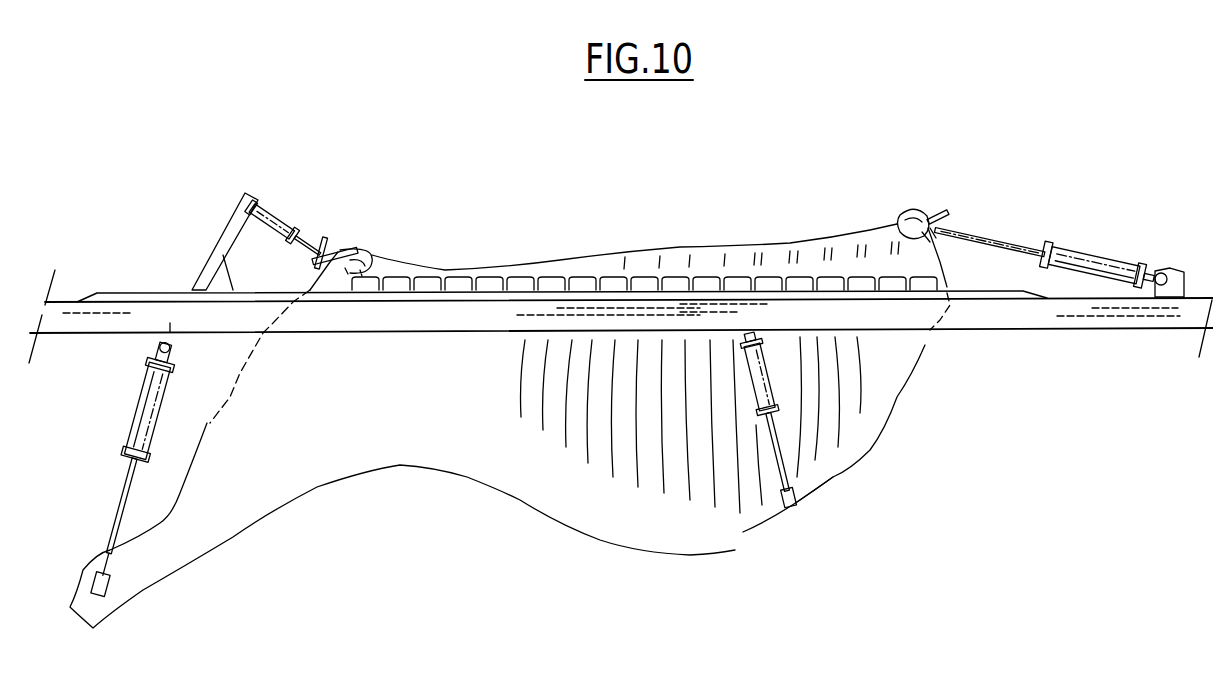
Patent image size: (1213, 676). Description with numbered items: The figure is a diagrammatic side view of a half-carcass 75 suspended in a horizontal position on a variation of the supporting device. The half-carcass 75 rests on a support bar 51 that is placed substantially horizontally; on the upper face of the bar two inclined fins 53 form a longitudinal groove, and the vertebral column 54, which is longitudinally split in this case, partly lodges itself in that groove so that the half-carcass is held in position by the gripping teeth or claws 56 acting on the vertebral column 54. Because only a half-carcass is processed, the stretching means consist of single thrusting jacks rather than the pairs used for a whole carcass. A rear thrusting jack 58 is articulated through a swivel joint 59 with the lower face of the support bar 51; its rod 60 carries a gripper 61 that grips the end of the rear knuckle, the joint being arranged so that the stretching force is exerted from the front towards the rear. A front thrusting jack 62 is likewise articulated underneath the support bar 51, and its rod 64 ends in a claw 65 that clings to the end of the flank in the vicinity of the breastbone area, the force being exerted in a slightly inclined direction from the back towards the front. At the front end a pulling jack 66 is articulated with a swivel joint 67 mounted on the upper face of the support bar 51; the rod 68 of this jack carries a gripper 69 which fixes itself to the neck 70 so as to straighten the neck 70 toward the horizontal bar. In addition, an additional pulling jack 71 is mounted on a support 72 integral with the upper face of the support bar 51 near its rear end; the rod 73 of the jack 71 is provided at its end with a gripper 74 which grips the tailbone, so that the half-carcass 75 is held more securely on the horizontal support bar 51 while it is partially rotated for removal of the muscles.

The support bar 51 is at (1027, 313).
The inclined fins 53 is at (970, 296).
The vertebral column 54 is at (644, 242).
The gripping teeth 56 is at (732, 284).
The rear thrusting jack 58 is at (140, 405).
The swivel joint 59 is at (162, 341).
The rod 60 is at (123, 498).
The gripper 61 is at (107, 587).
The front thrusting jack 62 is at (750, 383).
The rod 64 is at (777, 463).
The claw 65 is at (797, 502).
The pulling jack 66 is at (1098, 258).
The swivel joint 67 is at (1160, 272).
The rod 68 is at (1000, 240).
The gripper 69 is at (927, 222).
The neck 70 is at (890, 250).
The additional pulling jack 71 is at (275, 222).
The support 72 is at (227, 243).
The rod 73 is at (307, 247).
The gripper 74 is at (345, 260).
The half-carcass 75 is at (529, 520).